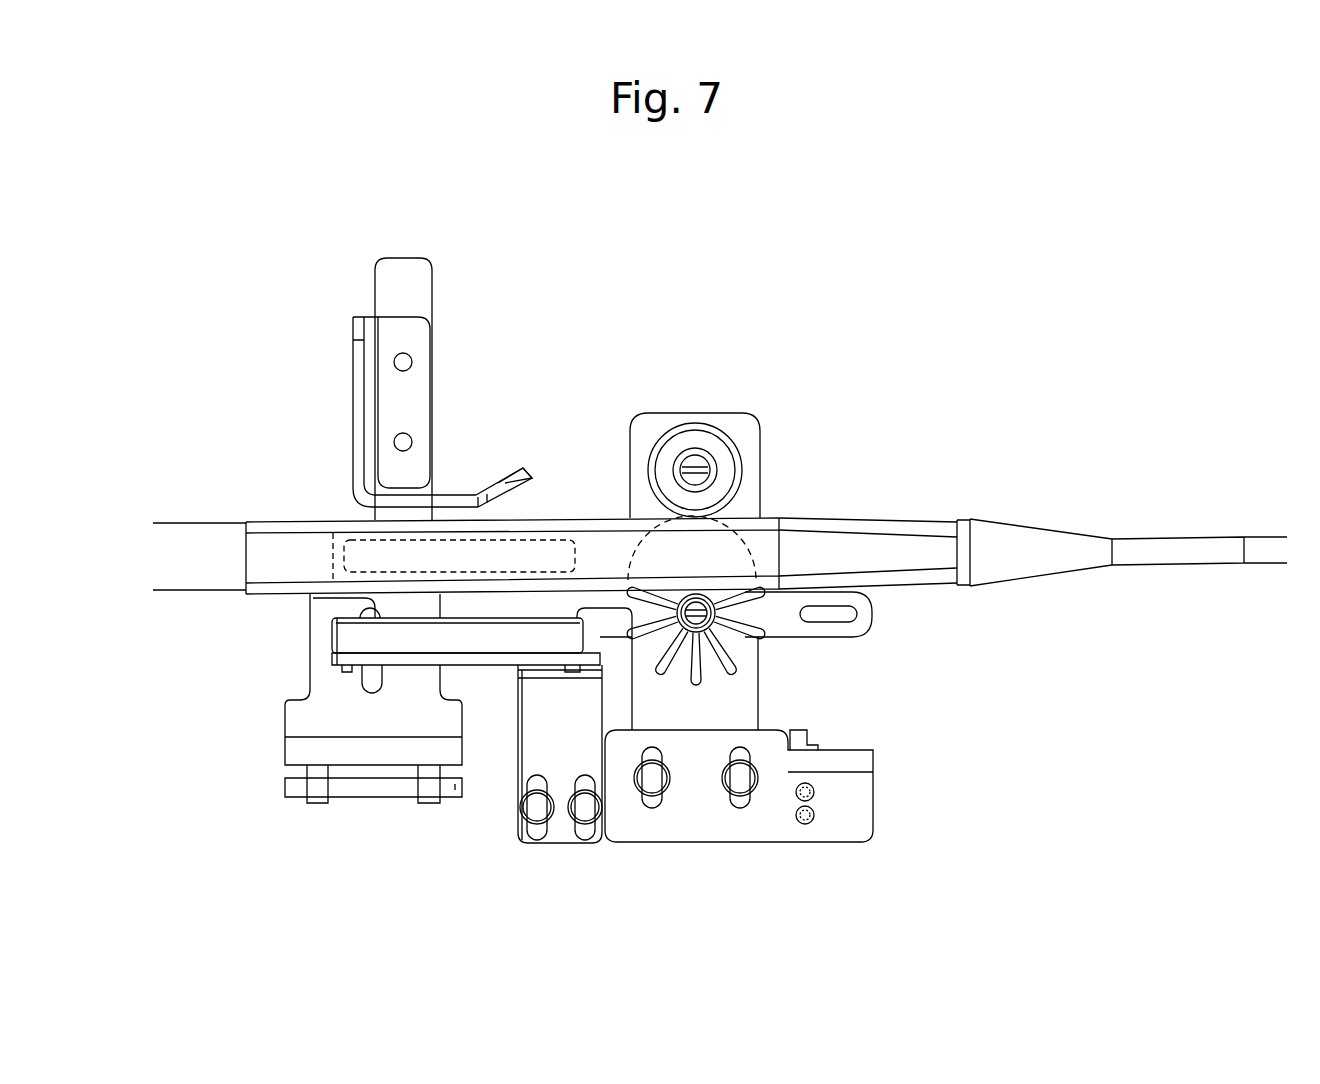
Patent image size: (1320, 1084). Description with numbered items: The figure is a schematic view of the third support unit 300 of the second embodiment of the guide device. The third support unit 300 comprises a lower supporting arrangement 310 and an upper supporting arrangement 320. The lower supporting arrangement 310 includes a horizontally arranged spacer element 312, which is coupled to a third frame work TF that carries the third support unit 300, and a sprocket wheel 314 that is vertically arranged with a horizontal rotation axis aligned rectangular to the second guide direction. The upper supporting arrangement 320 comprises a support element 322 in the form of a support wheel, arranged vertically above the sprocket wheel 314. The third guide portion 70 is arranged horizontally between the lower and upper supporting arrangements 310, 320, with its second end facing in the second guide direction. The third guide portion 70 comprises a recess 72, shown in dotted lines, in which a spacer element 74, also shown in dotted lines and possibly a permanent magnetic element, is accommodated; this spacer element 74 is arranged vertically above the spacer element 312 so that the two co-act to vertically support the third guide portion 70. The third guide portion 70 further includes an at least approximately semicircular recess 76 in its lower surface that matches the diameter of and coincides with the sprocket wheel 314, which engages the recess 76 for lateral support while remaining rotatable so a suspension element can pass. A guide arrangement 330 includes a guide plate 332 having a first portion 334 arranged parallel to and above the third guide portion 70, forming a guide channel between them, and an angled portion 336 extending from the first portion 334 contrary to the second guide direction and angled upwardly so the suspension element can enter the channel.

The third guide portion 70 is at (703, 604).
The recess 72 is at (332, 560).
The spacer element 74 is at (342, 573).
The semicircular recess 76 is at (737, 557).
The third support unit 300 is at (913, 269).
The lower supporting arrangement 310 is at (670, 742).
The spacer element 312 is at (493, 635).
The sprocket wheel 314 is at (714, 625).
The upper supporting arrangement 320 is at (771, 441).
The support element 322 is at (697, 442).
The guide arrangement 330 is at (396, 389).
The guide plate 332 is at (395, 419).
The first portion 334 is at (440, 502).
The angled portion 336 is at (523, 470).
The third frame work TF is at (698, 810).